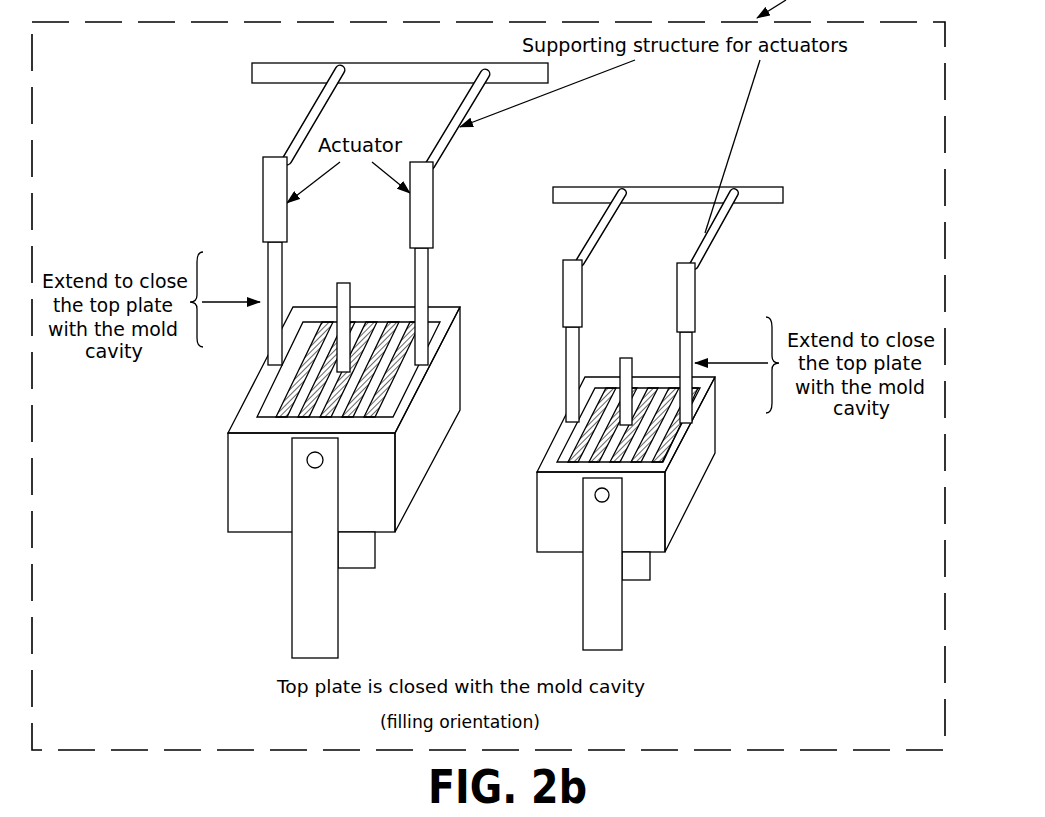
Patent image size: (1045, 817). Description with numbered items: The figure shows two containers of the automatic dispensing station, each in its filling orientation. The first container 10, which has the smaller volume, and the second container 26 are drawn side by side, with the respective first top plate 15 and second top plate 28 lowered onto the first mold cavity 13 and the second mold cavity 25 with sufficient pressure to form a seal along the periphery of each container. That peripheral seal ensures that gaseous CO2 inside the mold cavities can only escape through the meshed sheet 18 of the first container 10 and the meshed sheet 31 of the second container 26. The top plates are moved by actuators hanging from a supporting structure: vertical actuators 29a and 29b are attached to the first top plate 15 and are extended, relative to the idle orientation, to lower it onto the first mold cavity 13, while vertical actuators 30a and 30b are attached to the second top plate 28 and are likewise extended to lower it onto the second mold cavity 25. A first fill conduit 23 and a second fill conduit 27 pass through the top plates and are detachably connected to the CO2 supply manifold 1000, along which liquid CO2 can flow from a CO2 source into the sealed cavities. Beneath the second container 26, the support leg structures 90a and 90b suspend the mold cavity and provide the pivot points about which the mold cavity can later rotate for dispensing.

The first container 10 is at (624, 464).
The first mold cavity 13 is at (690, 517).
The first top plate 15 is at (553, 448).
The meshed sheet 18 is at (658, 440).
The first fill conduit 23 is at (627, 378).
The second mold cavity 25 is at (445, 435).
The second container 26 is at (301, 419).
The second fill conduit 27 is at (350, 298).
The second top plate 28 is at (250, 422).
The vertical actuator 29a is at (566, 297).
The vertical actuator 29b is at (692, 302).
The vertical actuator 30a is at (266, 188).
The vertical actuator 30b is at (410, 223).
The meshed sheet 31 is at (383, 398).
The support leg structure 90a is at (322, 645).
The support leg structure 90b is at (365, 560).
The CO2 supply manifold 1000 is at (621, 425).